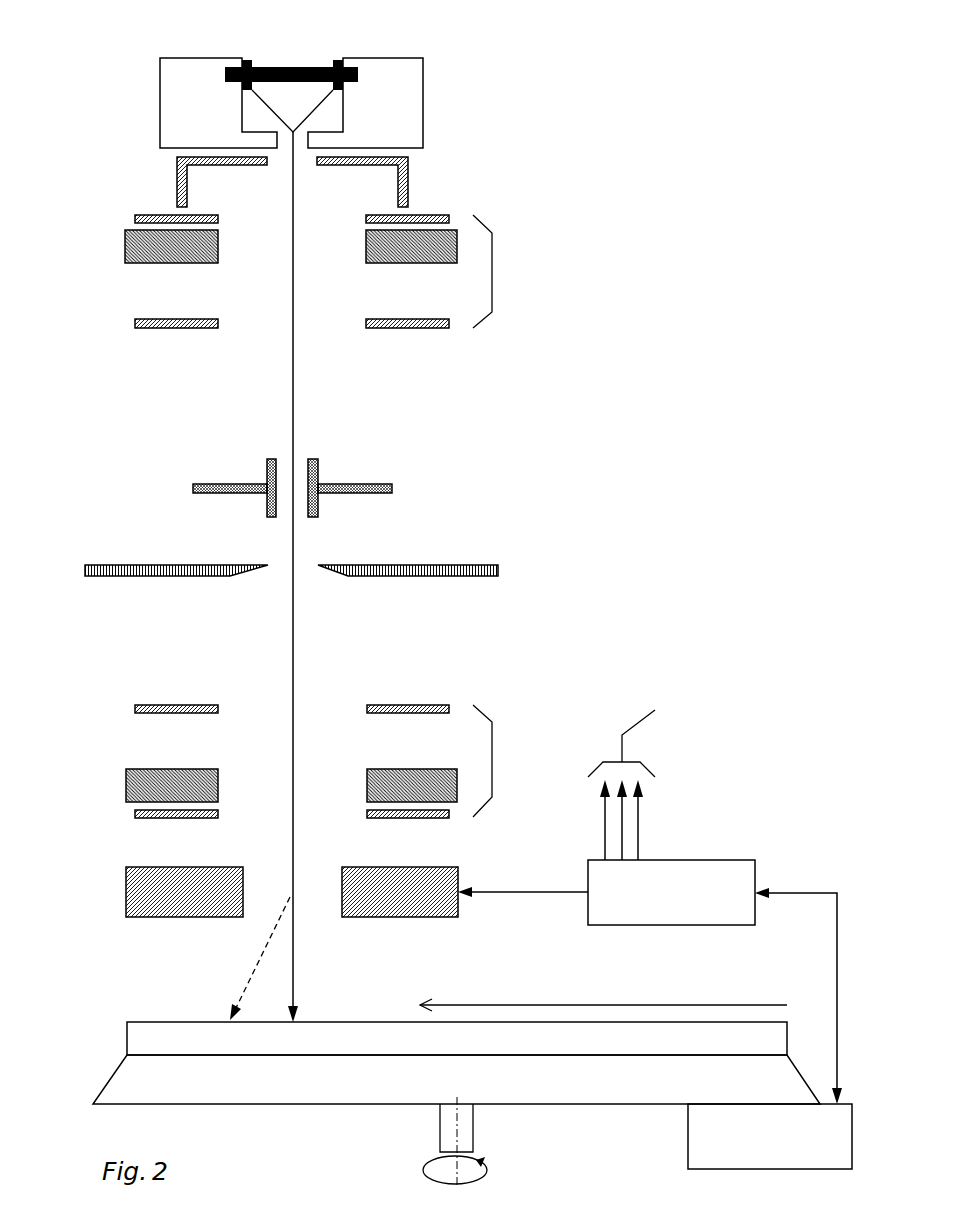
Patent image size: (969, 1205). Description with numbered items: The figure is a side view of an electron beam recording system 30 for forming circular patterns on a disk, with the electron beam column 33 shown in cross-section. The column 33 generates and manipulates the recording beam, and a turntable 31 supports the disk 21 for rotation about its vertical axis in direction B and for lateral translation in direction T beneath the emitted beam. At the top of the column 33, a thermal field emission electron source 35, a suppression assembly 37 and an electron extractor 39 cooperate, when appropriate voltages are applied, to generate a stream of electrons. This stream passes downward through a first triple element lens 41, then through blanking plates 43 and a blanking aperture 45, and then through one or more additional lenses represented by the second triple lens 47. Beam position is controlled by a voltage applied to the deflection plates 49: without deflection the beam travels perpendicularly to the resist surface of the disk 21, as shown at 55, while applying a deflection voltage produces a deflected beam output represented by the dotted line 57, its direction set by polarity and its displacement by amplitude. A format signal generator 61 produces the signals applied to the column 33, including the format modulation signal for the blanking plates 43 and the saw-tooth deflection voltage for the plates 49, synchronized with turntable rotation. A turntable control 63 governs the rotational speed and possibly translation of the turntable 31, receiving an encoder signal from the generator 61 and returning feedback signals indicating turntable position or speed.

The electron beam recording system 30 is at (780, 118).
The electron beam column 33 is at (473, 100).
The suppression assembly 37 is at (160, 107).
The thermal field emission (TFE) electron source 35 is at (277, 63).
The electron extractor 39 is at (408, 173).
The first triple element lens 41 is at (492, 271).
The blanking plates 43 is at (358, 482).
The blanking aperture 45 is at (473, 565).
The second triple lens 47 is at (492, 761).
The deflection plates 49 is at (458, 873).
The undeflected beam 55 is at (294, 992).
The deflected beam output 57 is at (240, 990).
The disk 21 is at (150, 1022).
The turntable 31 is at (325, 1104).
The format signal generator 61 is at (738, 860).
The turntable control 63 is at (688, 1123).